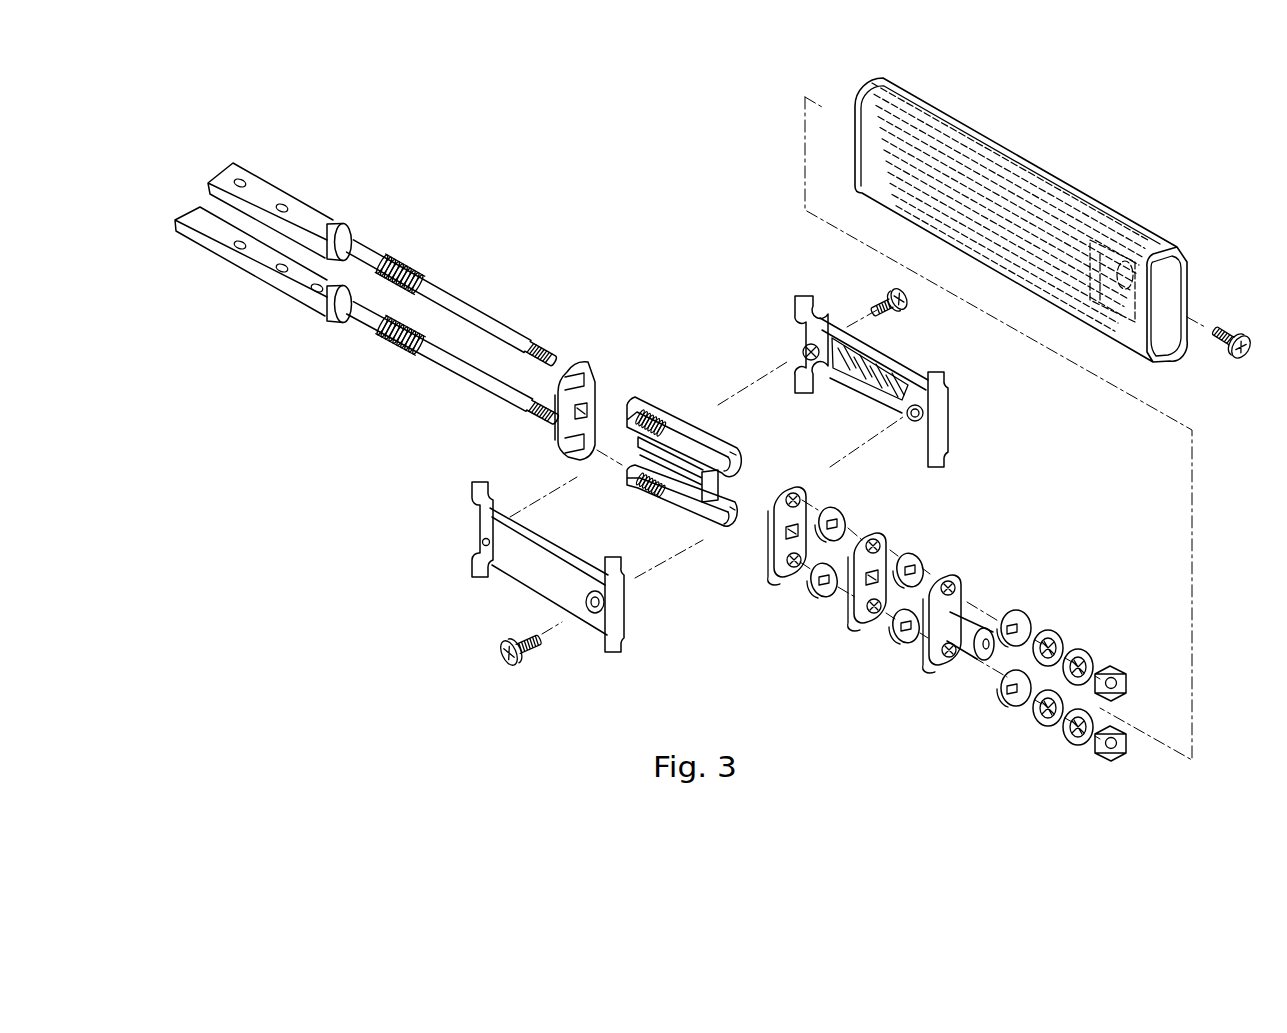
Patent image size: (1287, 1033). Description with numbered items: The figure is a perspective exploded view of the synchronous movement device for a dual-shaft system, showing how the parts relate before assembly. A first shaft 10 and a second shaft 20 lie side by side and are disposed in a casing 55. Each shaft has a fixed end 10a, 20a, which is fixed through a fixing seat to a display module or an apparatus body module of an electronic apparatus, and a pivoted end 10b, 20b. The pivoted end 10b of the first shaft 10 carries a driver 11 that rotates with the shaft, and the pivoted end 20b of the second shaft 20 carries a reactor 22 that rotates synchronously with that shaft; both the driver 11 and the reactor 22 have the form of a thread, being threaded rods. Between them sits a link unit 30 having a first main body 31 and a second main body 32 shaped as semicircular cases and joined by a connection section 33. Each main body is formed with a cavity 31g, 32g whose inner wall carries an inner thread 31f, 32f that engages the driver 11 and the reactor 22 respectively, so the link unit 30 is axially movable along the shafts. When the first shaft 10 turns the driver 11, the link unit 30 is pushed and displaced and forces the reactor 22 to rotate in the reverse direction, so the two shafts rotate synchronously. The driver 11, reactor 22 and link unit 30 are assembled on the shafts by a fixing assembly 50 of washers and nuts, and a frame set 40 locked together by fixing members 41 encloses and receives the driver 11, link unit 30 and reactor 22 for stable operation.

The first shaft 10 is at (383, 260).
The fixed end 10a is at (271, 197).
The pivoted end 10b is at (470, 310).
The driver 11 is at (393, 266).
The second shaft 20 is at (367, 323).
The fixed end 20a is at (249, 272).
The pivoted end 20b is at (473, 381).
The reactor 22 is at (390, 348).
The link unit 30 is at (692, 465).
The first main body 31 is at (707, 412).
The inner thread 31f is at (632, 412).
The cavity 31g is at (741, 463).
The second main body 32 is at (656, 526).
The inner thread 32f is at (640, 473).
The cavity 32g is at (713, 533).
The connection section 33 is at (672, 477).
The frame set 40 is at (902, 358).
The fixing member 41 is at (530, 662).
The fixing assembly 50 is at (842, 633).
The casing 55 is at (1023, 153).